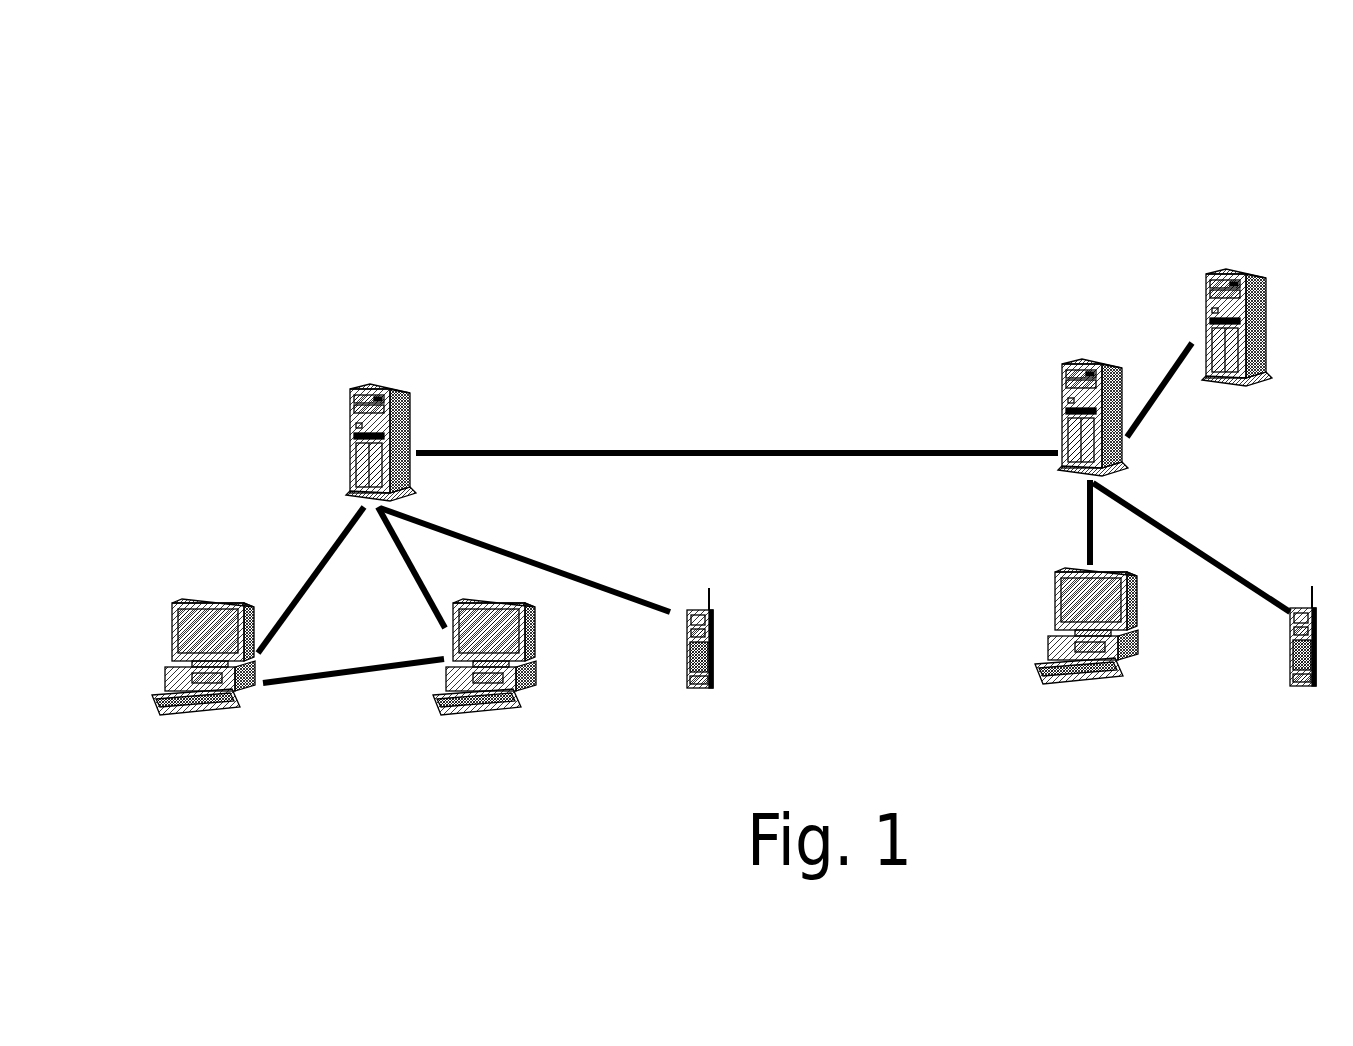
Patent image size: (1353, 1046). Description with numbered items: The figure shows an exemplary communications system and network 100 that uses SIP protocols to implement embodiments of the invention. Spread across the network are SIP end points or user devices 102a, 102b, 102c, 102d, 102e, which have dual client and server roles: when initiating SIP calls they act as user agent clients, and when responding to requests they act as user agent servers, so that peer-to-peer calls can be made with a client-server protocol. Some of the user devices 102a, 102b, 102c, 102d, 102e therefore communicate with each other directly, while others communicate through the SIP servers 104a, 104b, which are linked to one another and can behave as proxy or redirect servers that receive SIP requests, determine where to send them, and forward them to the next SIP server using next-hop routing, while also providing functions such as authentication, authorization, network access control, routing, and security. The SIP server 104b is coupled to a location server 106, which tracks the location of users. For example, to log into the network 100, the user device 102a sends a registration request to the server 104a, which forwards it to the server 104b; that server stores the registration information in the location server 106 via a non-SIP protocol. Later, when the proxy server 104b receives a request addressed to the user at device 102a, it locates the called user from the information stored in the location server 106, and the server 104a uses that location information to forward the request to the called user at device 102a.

The communications system and network 100 is at (606, 165).
The user device 102a is at (180, 712).
The user device 102b is at (465, 713).
The user device 102c is at (690, 690).
The user device 102d is at (1055, 680).
The user device 102e is at (1295, 688).
The SIP server 104a is at (350, 425).
The SIP server 104b is at (1062, 425).
The location server 106 is at (1207, 287).